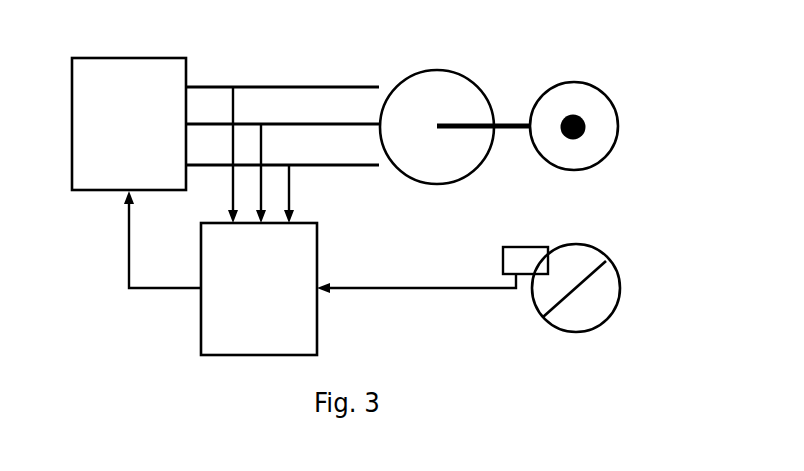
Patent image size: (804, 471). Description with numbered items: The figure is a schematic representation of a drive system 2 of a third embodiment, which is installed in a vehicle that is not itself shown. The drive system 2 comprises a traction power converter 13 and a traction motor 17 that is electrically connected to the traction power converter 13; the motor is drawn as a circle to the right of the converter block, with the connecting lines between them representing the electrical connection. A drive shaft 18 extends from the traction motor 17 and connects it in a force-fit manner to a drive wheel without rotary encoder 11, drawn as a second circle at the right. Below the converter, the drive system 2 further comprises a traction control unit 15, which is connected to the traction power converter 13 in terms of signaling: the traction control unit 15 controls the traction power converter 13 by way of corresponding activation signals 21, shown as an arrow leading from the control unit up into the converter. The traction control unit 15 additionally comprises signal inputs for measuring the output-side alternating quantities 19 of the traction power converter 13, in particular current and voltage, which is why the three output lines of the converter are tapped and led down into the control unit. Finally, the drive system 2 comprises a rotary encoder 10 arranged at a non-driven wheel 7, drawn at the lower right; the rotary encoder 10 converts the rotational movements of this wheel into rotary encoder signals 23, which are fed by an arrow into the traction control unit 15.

The drive system 2 is at (684, 247).
The non-driven wheel 7 is at (591, 308).
The rotary encoder 10 is at (527, 255).
The drive wheel without rotary encoder 11 is at (592, 145).
The traction power converter 13 is at (129, 124).
The traction control unit 15 is at (259, 289).
The traction motor 17 is at (445, 90).
The drive shaft 18 is at (507, 120).
The output-side alternating quantities 19 is at (288, 178).
The activation signals 21 is at (143, 288).
The rotary encoder signals 23 is at (477, 289).